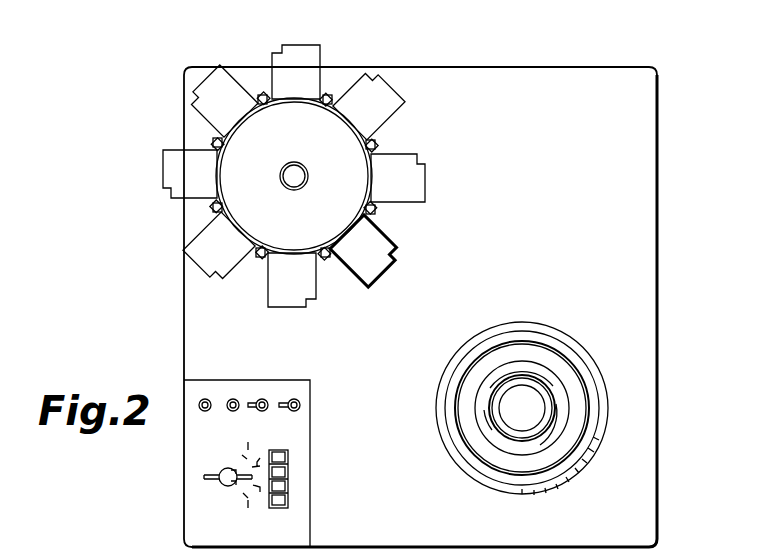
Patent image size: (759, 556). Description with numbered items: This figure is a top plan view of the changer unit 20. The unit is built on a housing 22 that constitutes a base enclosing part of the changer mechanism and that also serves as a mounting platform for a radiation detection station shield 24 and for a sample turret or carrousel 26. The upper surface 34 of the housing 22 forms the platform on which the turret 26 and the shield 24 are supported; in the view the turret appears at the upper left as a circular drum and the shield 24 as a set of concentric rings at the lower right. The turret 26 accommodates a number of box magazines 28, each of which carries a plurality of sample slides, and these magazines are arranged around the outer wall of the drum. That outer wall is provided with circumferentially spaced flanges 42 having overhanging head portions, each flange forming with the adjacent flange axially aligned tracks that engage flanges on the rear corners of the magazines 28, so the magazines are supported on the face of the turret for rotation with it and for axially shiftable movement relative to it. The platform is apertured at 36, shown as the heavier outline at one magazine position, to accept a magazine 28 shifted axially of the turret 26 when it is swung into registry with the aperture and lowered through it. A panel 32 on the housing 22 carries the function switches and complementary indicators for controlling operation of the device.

The changer unit 20 is at (660, 206).
The housing 22 is at (649, 308).
The radiation detection station shield 24 is at (532, 314).
The sample turret 26 is at (389, 147).
The box magazine 28 is at (270, 46).
The panel 32 is at (206, 446).
The upper surface 34 is at (571, 233).
The aperture 36 is at (410, 258).
The flange 42 is at (331, 104).